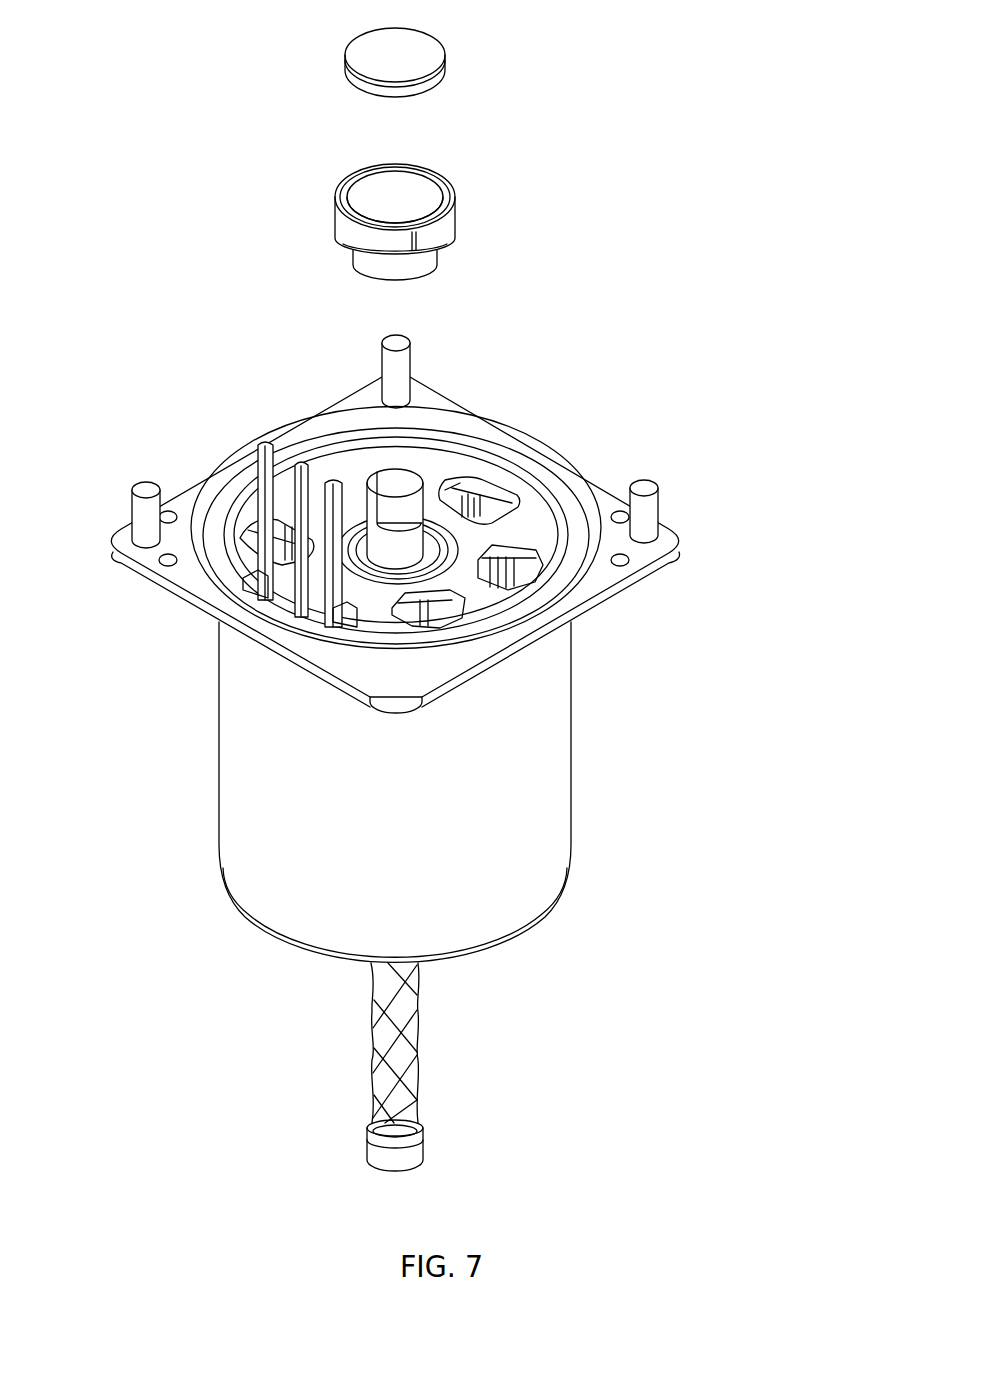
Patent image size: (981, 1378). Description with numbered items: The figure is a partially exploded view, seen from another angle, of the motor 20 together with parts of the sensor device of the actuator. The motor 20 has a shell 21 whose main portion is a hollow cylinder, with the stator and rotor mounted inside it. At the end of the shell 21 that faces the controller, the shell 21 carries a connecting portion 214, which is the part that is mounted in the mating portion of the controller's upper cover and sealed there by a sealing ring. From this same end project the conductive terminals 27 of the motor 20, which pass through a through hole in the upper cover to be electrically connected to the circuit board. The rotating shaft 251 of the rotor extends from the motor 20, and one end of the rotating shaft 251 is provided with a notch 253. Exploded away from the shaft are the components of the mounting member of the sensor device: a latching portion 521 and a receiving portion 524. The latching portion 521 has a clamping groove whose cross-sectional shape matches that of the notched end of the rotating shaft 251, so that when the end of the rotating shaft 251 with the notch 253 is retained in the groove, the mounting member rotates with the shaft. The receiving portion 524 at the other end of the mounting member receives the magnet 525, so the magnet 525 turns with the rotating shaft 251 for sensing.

The magnet 525 is at (420, 45).
The receiving portion 524 is at (452, 193).
The latching portion 521 is at (427, 257).
The notch 253 is at (400, 501).
The conductive terminals 27 is at (263, 457).
The connecting portion 214 is at (665, 535).
The rotating shaft 251 is at (402, 1040).
The motor 20 is at (421, 753).
The shell 21 is at (562, 797).